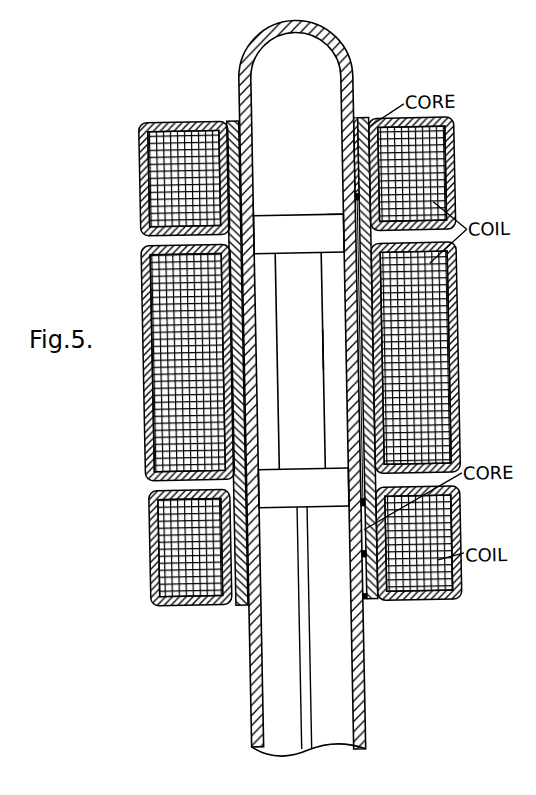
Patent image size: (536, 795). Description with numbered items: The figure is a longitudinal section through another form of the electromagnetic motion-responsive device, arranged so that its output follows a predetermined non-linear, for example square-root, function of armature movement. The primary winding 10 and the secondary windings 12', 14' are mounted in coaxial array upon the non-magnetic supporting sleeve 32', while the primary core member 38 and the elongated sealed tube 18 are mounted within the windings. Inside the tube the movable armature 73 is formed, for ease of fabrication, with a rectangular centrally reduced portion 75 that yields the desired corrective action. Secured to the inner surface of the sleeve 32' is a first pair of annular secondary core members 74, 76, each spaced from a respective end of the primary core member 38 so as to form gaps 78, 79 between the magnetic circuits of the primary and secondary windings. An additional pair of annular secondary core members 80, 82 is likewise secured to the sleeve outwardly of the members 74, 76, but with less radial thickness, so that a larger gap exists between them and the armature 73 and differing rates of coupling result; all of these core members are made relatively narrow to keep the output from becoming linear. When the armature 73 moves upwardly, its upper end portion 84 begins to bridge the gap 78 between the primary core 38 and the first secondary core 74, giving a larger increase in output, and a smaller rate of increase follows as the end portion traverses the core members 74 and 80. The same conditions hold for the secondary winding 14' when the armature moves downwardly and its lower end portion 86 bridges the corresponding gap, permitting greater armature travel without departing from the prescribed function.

The elongated sealed tube 18 is at (248, 57).
The supporting sleeve 32' is at (314, 348).
The secondary winding 12' is at (314, 176).
The primary winding 10 is at (458, 369).
The secondary winding 14' is at (321, 545).
The secondary core member 80 is at (361, 143).
The secondary core member 74 is at (360, 173).
The upper end portion 84 is at (340, 211).
The gap 78 is at (254, 210).
The armature 73 is at (311, 251).
The centrally reduced portion 75 is at (334, 352).
The primary core member 38 is at (358, 378).
The lower end portion 86 is at (300, 475).
The gap 79 is at (359, 512).
The secondary core member 76 is at (358, 543).
The secondary core member 82 is at (352, 574).